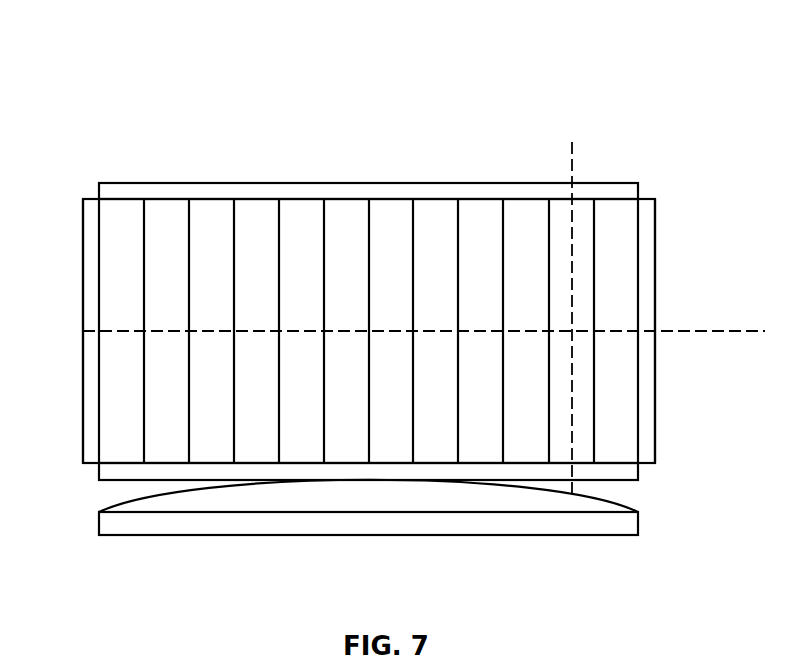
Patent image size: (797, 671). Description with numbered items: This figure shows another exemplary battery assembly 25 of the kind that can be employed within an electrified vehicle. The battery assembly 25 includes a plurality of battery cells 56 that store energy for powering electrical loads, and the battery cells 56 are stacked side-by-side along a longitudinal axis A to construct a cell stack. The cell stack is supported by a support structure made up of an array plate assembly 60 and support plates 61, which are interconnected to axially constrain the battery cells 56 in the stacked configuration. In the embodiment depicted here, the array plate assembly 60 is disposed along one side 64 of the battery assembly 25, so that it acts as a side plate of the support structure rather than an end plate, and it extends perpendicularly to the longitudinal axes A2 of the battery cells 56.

The battery assembly 25 is at (455, 159).
The battery cells 56 is at (173, 212).
The array plate assembly 60 is at (370, 536).
The support plates 61 is at (88, 250).
The side 64 is at (413, 464).
The longitudinal axis A is at (758, 332).
The longitudinal axes of the battery cells A2 is at (572, 160).